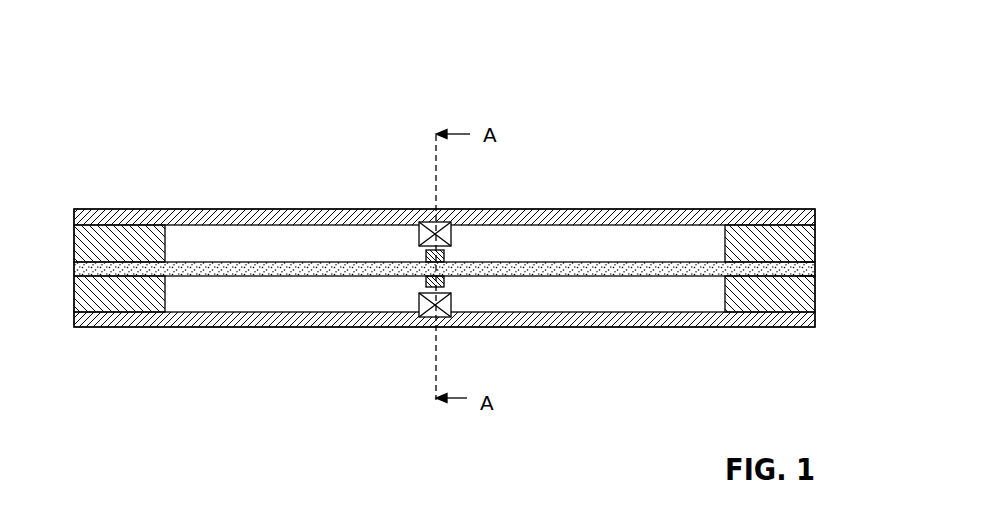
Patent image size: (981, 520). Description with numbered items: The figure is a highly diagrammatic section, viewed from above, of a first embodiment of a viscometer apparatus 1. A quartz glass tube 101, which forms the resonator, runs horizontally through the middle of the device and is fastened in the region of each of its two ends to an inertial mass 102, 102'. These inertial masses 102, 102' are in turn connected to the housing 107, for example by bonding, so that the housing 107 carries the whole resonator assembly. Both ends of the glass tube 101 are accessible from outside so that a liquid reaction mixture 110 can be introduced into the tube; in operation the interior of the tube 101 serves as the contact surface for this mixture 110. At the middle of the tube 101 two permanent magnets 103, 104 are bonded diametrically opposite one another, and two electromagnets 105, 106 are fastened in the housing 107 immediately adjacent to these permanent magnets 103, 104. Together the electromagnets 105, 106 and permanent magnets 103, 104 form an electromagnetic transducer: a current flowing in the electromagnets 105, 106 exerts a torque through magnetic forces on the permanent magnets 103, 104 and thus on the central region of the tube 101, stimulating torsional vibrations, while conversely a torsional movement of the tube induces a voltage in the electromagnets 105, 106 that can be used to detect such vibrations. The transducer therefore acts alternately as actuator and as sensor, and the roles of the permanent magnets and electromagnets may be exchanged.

The apparatus 1 is at (785, 78).
The quartz glass tube 101 is at (697, 262).
The inertial mass 102 is at (103, 221).
The inertial mass 102' is at (785, 221).
The permanent magnet 103 is at (427, 252).
The permanent magnet 104 is at (425, 283).
The electromagnet 105 is at (452, 223).
The electromagnet 106 is at (453, 320).
The housing 107 is at (185, 318).
The liquid reaction mixture 110 is at (810, 275).